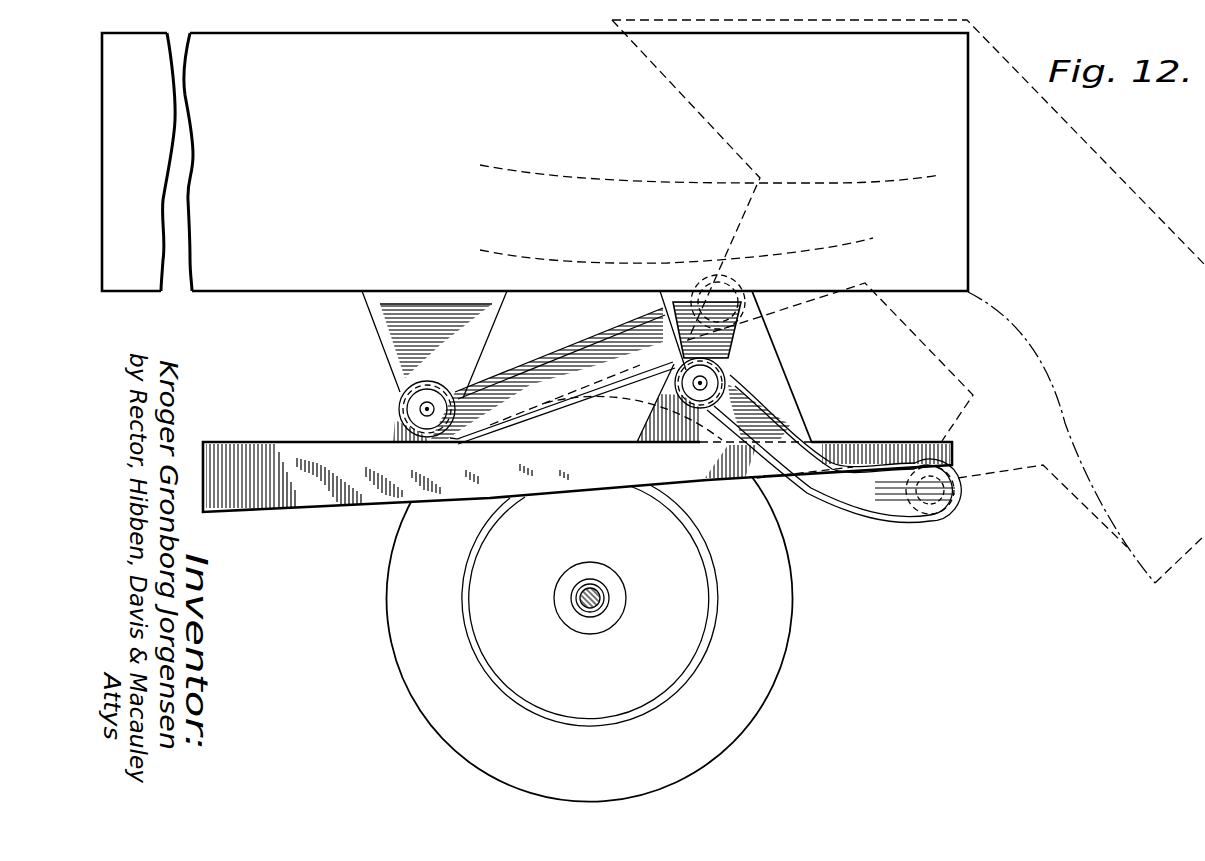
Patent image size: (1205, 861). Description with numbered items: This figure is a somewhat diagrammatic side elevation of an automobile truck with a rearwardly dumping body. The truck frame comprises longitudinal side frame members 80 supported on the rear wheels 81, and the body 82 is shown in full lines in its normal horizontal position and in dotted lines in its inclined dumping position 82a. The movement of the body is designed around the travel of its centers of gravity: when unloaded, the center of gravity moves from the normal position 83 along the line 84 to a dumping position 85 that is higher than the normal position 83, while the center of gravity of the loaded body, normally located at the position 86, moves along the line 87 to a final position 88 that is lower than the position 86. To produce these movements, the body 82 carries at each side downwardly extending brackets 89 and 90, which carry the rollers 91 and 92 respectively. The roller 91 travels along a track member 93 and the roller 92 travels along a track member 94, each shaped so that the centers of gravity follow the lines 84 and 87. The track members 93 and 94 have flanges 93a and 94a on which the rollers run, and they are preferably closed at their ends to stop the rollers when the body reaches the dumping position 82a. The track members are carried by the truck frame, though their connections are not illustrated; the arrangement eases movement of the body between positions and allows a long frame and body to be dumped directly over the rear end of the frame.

The longitudinal side frame member 80 is at (278, 512).
The rear wheel 81 is at (797, 618).
The body 82 is at (245, 275).
The inclined dumping position 82a is at (1087, 513).
The normal position of center of gravity of unloaded body 83 is at (480, 250).
The line of travel of unloaded center of gravity 84 is at (665, 262).
The dumping position of center of gravity of unloaded body 85 is at (873, 238).
The normal position of center of gravity of loaded body 86 is at (480, 165).
The line of travel of loaded center of gravity 87 is at (675, 183).
The final position of center of gravity of loaded body 88 is at (940, 177).
The bracket 89 is at (470, 346).
The bracket 90 is at (665, 323).
The roller 91 is at (392, 406).
The roller 92 is at (747, 381).
The track member 93 is at (555, 372).
The flange 93a is at (612, 392).
The track member 94 is at (796, 452).
The flange 94a is at (830, 512).